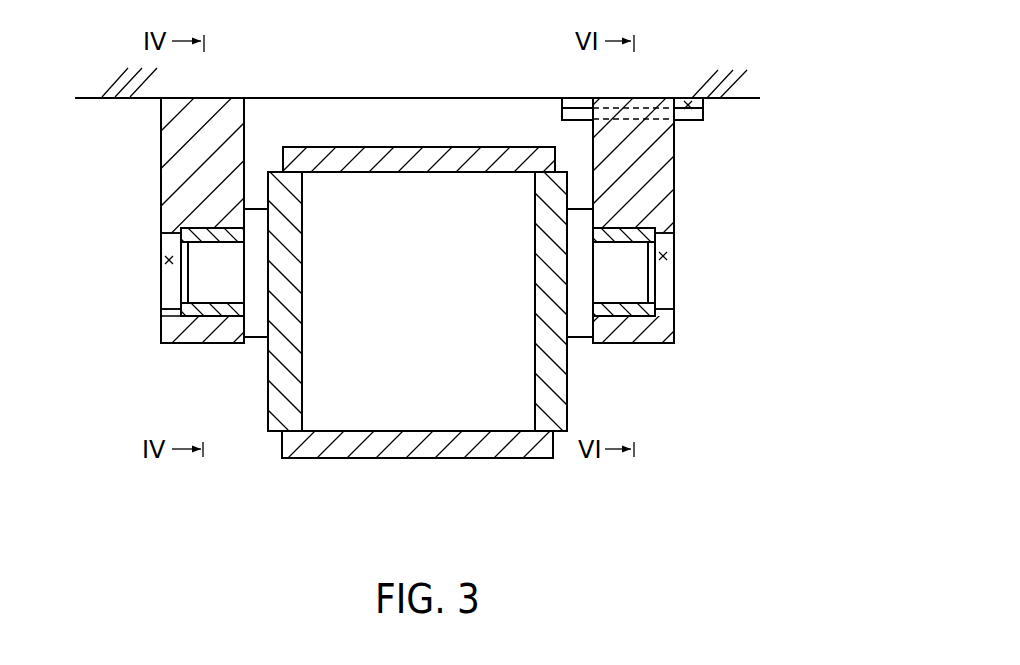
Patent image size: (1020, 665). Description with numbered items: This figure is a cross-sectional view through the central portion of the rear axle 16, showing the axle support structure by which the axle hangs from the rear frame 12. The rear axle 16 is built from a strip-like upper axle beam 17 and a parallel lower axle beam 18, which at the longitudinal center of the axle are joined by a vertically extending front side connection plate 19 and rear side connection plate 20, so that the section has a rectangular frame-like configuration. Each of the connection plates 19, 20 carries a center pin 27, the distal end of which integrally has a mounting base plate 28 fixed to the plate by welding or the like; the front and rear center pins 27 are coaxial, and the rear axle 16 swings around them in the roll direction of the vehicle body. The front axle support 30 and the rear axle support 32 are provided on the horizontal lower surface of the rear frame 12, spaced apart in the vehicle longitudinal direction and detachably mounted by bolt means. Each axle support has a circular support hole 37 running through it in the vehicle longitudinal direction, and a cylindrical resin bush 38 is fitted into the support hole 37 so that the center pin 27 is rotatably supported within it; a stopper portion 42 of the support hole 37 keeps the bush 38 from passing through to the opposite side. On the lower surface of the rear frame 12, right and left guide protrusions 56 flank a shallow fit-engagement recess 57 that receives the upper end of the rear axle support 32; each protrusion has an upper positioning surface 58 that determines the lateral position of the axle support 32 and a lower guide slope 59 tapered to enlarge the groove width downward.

The rear frame 12 is at (706, 84).
The rear axle 16 is at (393, 460).
The upper axle beam 17 is at (408, 153).
The lower axle beam 18 is at (453, 448).
The front side connection plate 19 is at (280, 416).
The rear side connection plate 20 is at (548, 393).
The center pin 27 is at (197, 277).
The mounting base plate 28 is at (258, 322).
The front axle support 30 is at (160, 161).
The rear axle support 32 is at (677, 167).
The support hole 37 is at (165, 259).
The bush 38 is at (178, 343).
The stopper portion 42 is at (176, 314).
The guide protrusion 56 is at (706, 115).
The fit-engagement recess 57 is at (690, 100).
The positioning surface 58 is at (575, 100).
The guide slope 59 is at (570, 114).